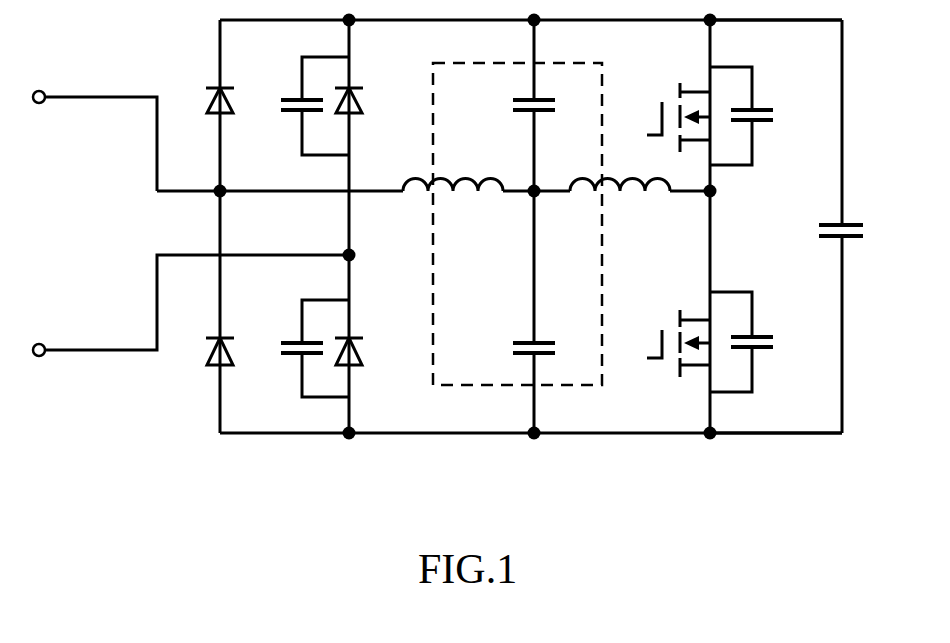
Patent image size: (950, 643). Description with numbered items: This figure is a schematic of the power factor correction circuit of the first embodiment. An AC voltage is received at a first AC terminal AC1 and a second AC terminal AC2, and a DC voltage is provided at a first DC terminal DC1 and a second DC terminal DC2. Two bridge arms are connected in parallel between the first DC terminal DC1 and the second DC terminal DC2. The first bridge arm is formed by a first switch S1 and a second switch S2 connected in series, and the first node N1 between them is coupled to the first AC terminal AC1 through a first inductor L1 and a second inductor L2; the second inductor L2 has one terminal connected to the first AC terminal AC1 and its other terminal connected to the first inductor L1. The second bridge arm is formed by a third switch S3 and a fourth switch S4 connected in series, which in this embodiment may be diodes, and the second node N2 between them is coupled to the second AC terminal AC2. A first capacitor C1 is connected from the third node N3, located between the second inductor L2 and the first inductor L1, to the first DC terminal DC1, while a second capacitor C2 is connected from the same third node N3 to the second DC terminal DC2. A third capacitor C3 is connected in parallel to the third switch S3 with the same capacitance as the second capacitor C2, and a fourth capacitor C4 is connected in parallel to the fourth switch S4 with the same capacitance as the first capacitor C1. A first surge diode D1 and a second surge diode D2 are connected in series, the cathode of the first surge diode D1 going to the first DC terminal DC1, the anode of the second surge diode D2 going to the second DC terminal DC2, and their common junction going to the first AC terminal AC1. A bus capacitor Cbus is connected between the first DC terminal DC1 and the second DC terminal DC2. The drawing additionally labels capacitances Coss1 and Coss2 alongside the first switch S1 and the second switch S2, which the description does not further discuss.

The first AC terminal AC1 is at (95, 125).
The second AC terminal AC2 is at (191, 305).
The first surge diode D1 is at (206, 85).
The second surge diode D2 is at (206, 371).
The third capacitor C3 is at (308, 106).
The fourth capacitor C4 is at (308, 351).
The third switch S3 is at (364, 109).
The fourth switch S4 is at (364, 355).
The first capacitor C1 is at (551, 92).
The second capacitor C2 is at (551, 340).
The first inductor L1 is at (620, 204).
The second inductor L2 is at (453, 204).
The first switch S1 is at (668, 117).
The second switch S2 is at (668, 343).
The output capacitance of S1 Coss1 is at (766, 116).
The output capacitance of S2 Coss2 is at (766, 342).
The bus capacitor Cbus is at (860, 249).
The first DC terminal DC1 is at (776, 39).
The second DC terminal DC2 is at (776, 419).
The first node N1 is at (730, 207).
The second node N2 is at (369, 257).
The third node N3 is at (550, 173).